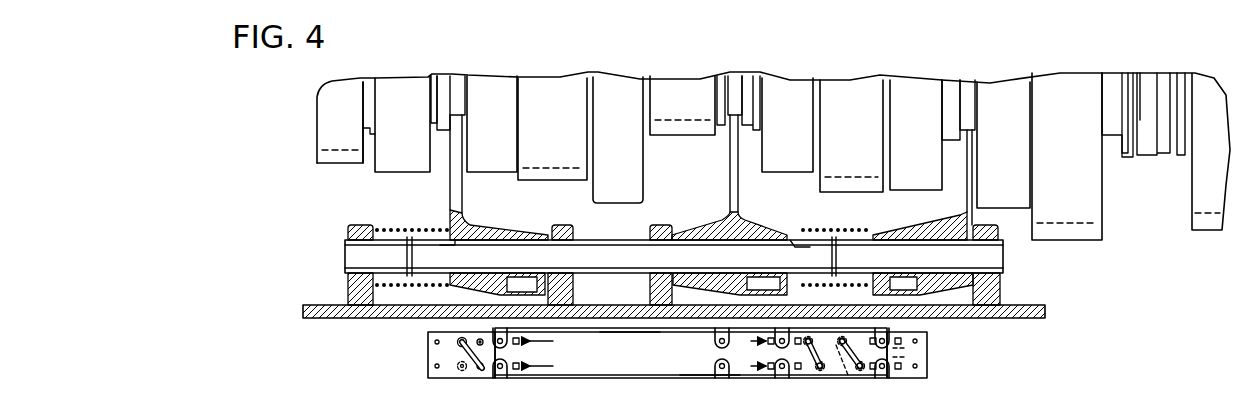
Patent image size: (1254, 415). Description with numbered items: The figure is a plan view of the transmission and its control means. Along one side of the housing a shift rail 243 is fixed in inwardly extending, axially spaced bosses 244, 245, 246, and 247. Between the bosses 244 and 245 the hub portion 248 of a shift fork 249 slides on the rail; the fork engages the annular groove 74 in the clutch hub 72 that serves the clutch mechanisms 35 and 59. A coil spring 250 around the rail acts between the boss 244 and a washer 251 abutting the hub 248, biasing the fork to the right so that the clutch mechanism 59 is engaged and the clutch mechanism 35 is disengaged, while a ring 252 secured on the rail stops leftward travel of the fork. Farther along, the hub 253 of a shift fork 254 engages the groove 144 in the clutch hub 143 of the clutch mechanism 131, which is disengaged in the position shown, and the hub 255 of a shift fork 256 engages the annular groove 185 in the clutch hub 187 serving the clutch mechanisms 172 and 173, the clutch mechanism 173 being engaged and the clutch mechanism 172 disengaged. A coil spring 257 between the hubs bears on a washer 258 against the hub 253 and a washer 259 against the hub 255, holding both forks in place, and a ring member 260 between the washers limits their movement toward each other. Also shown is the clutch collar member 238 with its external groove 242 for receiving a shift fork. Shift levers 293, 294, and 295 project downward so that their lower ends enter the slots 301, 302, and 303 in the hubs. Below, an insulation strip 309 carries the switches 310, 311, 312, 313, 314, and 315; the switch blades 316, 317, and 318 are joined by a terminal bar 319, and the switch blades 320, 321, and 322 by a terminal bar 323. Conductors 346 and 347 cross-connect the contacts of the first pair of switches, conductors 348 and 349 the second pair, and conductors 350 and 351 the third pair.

The clutch mechanism 35 is at (410, 80).
The clutch hub 72 is at (437, 78).
The annular groove 74 is at (456, 80).
The clutch mechanism 59 is at (491, 88).
The groove 144 is at (735, 75).
The clutch hub 143 is at (745, 80).
The clutch mechanism 131 is at (787, 95).
The clutch mechanism 172 is at (912, 95).
The clutch hub 187 is at (953, 85).
The annular groove 185 is at (967, 85).
The clutch mechanism 173 is at (1006, 90).
The annular external groove 242 is at (1148, 135).
The clutch collar member 238 is at (1130, 158).
The coil spring 250 is at (390, 228).
The shift fork 249 is at (455, 180).
The hub portion 248 is at (492, 232).
The shift rail 243 is at (608, 240).
The shift fork 254 is at (732, 150).
The hub 253 is at (705, 235).
The coil spring 257 is at (815, 228).
The hub 255 is at (905, 225).
The shift fork 256 is at (968, 180).
The ring 252 is at (405, 256).
The washer 251 is at (448, 245).
The slot 301 is at (520, 280).
The slot 302 is at (750, 280).
The washer 258 is at (800, 248).
The ring member 260 is at (837, 257).
The washer 259 is at (873, 246).
The slot 303 is at (915, 280).
The boss 244 is at (348, 292).
The shift lever 293 is at (505, 290).
The boss 245 is at (570, 290).
The boss 246 is at (652, 290).
The shift lever 294 is at (760, 290).
The shift lever 295 is at (890, 290).
The boss 247 is at (995, 290).
The switch blade 320 is at (470, 328).
The conductor 347 is at (440, 340).
The conductor 346 is at (440, 366).
The switch blade 316 is at (485, 380).
The switch 311 is at (553, 340).
The switch 310 is at (553, 366).
The terminal bar 323 is at (630, 333).
The insulation strip 309 is at (605, 378).
The terminal bar 319 is at (700, 378).
The switch 313 is at (751, 340).
The switch blade 321 is at (772, 352).
The switch 312 is at (751, 366).
The switch blade 317 is at (766, 378).
The conductor 349 is at (812, 372).
The conductor 348 is at (835, 372).
The conductor 350 is at (855, 382).
The conductor 351 is at (858, 370).
The switch blade 318 is at (905, 378).
The switch 314 is at (930, 375).
The switch 315 is at (912, 338).
The switch blade 322 is at (905, 352).